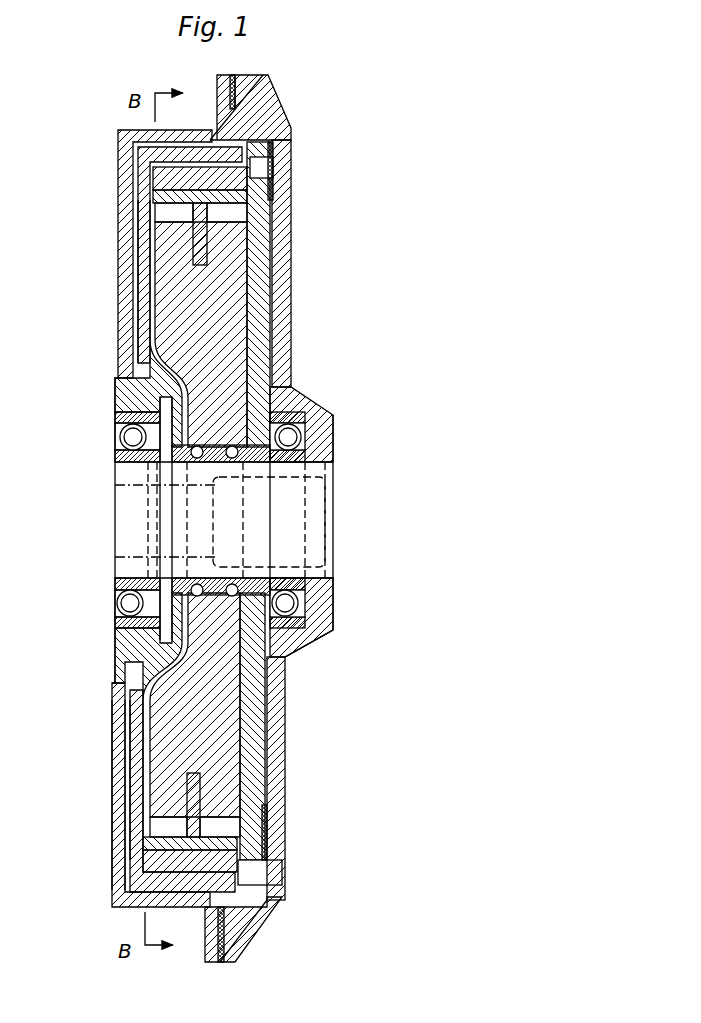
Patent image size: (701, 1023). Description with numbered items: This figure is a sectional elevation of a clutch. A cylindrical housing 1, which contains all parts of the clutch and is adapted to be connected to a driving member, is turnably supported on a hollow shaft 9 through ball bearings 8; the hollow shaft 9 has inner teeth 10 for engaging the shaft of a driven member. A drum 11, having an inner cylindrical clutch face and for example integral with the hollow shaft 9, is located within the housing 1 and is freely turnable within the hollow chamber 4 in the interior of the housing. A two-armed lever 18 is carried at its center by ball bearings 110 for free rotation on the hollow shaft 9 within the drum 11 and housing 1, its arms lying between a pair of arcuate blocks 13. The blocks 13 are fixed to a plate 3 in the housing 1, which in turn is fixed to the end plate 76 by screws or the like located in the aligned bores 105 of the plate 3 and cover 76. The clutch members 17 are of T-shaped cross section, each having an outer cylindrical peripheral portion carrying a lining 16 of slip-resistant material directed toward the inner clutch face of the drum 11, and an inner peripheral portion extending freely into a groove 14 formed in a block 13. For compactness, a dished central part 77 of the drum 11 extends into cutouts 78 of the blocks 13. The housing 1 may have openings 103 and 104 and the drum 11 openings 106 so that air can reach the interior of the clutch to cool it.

The housing 1 is at (238, 98).
The plate 3 is at (258, 270).
The hollow chamber 4 is at (125, 318).
The ball bearings 8 is at (120, 440).
The hollow shaft 9 is at (137, 475).
The inner teeth 10 is at (138, 555).
The drum 11 is at (178, 150).
The arcuate blocks 13 is at (205, 330).
The groove 14 is at (198, 262).
The lining 16 is at (165, 182).
The clutch members 17 is at (175, 200).
The two-armed lever 18 is at (292, 642).
The end plate 76 is at (282, 213).
The dished central part 77 is at (130, 417).
The cutouts 78 is at (155, 395).
The opening 103 is at (262, 108).
The opening 104 is at (118, 697).
The aligned bores 105 is at (275, 165).
The openings 106 is at (144, 238).
The ball bearings 110 is at (235, 446).